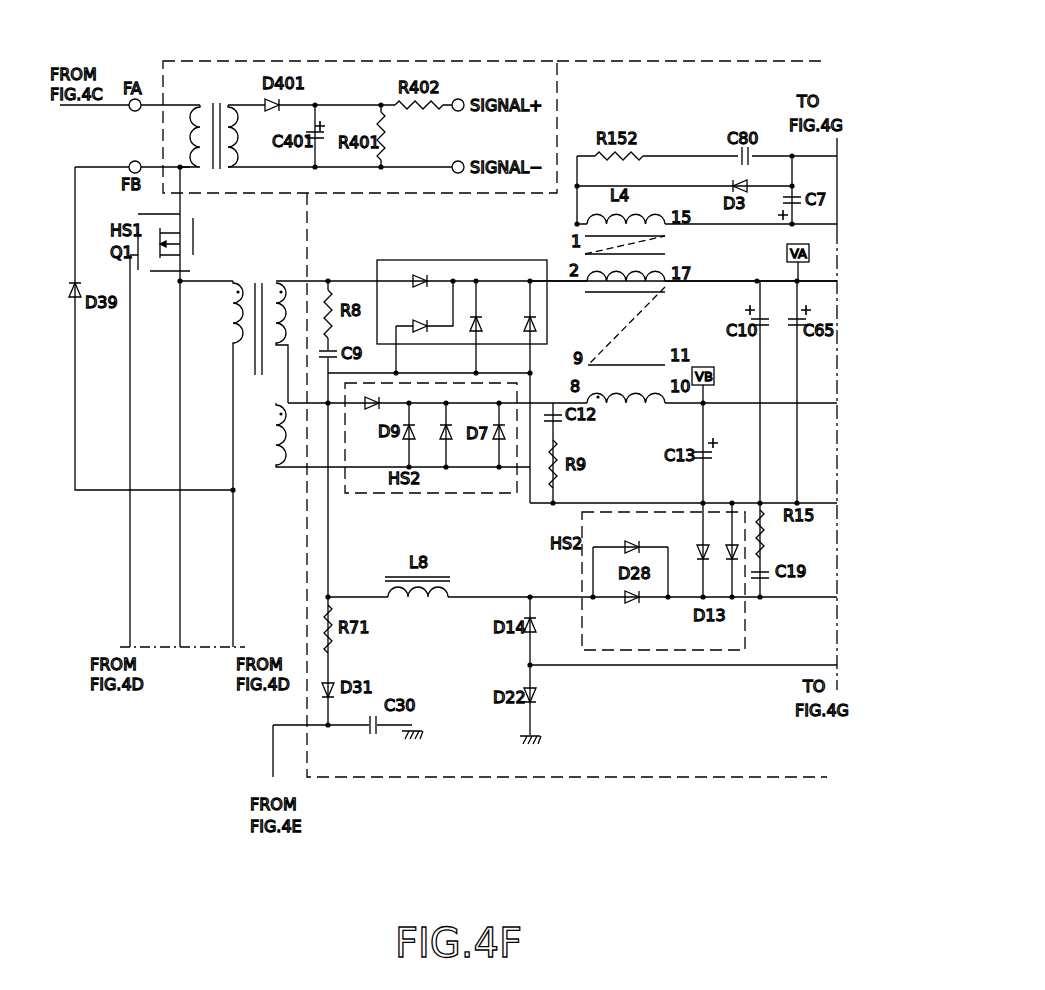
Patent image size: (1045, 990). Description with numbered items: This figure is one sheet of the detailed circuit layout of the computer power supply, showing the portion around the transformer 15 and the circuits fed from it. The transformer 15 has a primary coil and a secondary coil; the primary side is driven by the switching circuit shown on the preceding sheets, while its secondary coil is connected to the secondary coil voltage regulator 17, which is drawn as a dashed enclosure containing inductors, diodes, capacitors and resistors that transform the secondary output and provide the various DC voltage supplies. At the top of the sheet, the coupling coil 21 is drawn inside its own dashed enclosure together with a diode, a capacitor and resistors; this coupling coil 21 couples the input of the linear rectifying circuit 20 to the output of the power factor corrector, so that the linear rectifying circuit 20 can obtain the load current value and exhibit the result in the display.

The coupling coil 21 is at (218, 78).
The transformer 15 is at (257, 262).
The linear rectifying circuit 20 is at (437, 193).
The secondary coil voltage regulator 17 is at (745, 767).